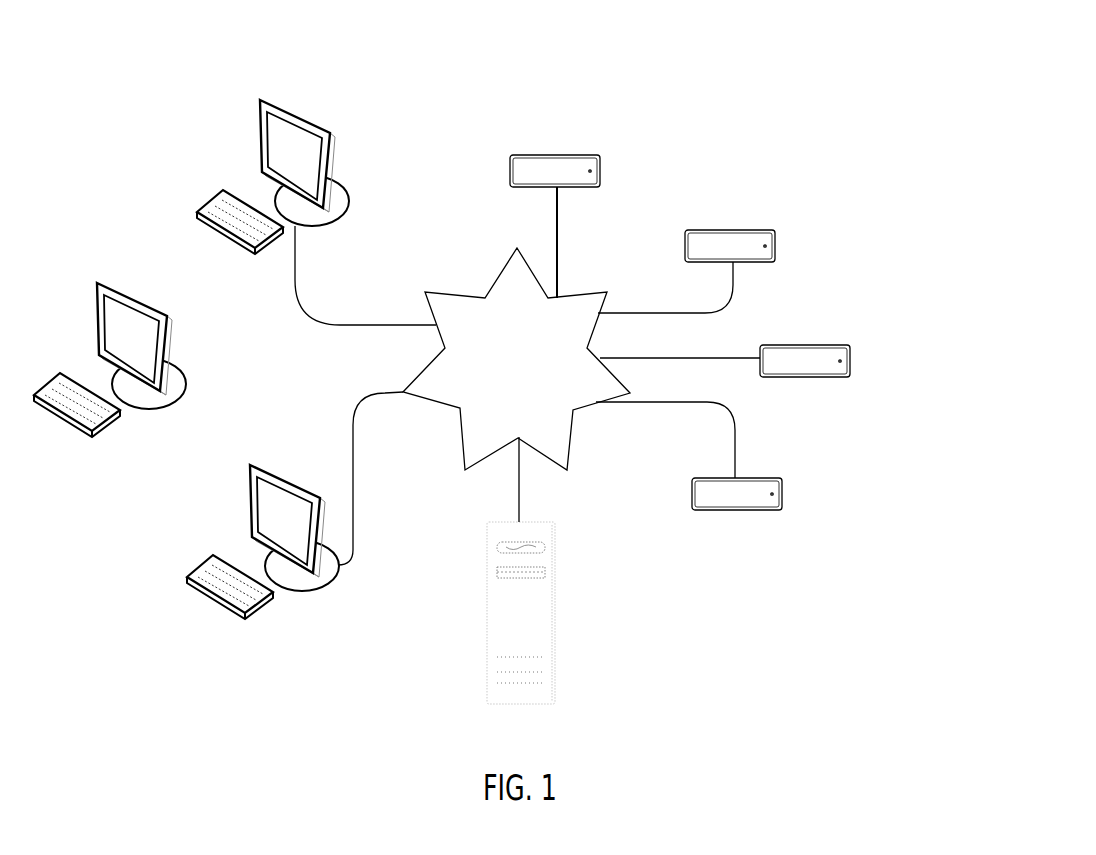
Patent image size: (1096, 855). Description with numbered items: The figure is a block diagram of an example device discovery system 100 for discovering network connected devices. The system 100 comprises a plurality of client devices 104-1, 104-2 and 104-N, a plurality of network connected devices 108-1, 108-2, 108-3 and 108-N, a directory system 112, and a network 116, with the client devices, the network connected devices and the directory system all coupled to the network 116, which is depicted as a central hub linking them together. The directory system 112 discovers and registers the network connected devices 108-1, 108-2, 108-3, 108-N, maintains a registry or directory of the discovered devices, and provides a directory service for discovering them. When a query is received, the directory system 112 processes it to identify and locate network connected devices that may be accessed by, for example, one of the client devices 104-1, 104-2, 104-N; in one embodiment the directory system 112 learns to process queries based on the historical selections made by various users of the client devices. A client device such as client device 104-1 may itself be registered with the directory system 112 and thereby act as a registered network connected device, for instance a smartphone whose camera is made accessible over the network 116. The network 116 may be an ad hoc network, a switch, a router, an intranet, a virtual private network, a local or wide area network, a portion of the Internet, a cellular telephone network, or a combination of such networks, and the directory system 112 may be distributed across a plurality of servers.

The device discovery system 100 is at (652, 55).
The client device 104-1 is at (332, 224).
The client device 104-2 is at (173, 406).
The client device 104-N is at (310, 592).
The network connected device 108-1 is at (572, 187).
The network connected device 108-2 is at (753, 262).
The network connected device 108-3 is at (823, 378).
The network connected device 108-N is at (752, 512).
The directory system 112 is at (555, 562).
The network 116 is at (574, 412).